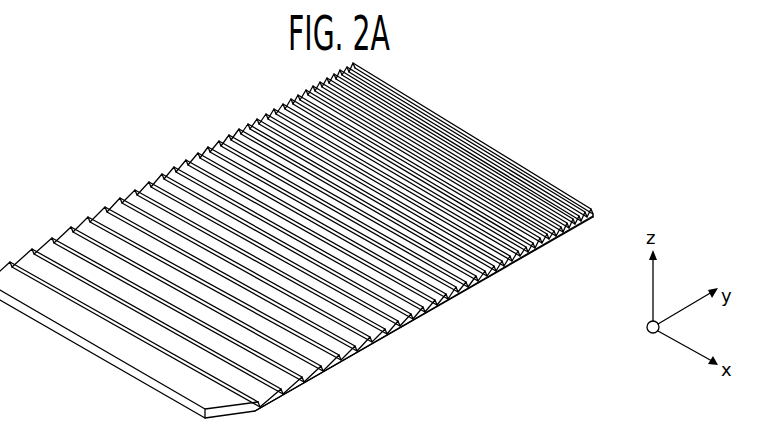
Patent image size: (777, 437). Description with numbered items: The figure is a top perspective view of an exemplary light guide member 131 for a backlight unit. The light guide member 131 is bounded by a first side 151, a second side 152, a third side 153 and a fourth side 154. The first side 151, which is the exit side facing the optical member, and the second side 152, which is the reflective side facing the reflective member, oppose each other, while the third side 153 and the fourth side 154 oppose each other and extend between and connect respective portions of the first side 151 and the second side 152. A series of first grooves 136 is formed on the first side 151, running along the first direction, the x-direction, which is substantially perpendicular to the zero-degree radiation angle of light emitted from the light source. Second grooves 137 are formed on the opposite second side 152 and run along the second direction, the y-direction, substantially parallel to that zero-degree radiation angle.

The light guide member 131 is at (317, 243).
The first grooves 136 is at (80, 236).
The second grooves 137 is at (381, 340).
The first side 151 is at (142, 179).
The second side 152 is at (470, 291).
The third side 153 is at (78, 354).
The fourth side 154 is at (468, 121).